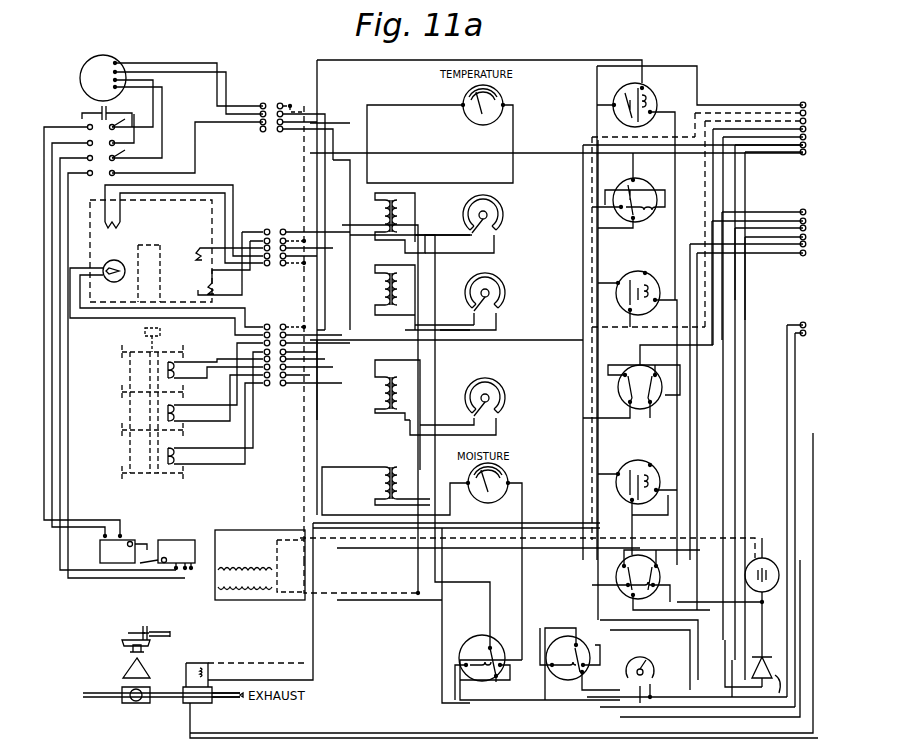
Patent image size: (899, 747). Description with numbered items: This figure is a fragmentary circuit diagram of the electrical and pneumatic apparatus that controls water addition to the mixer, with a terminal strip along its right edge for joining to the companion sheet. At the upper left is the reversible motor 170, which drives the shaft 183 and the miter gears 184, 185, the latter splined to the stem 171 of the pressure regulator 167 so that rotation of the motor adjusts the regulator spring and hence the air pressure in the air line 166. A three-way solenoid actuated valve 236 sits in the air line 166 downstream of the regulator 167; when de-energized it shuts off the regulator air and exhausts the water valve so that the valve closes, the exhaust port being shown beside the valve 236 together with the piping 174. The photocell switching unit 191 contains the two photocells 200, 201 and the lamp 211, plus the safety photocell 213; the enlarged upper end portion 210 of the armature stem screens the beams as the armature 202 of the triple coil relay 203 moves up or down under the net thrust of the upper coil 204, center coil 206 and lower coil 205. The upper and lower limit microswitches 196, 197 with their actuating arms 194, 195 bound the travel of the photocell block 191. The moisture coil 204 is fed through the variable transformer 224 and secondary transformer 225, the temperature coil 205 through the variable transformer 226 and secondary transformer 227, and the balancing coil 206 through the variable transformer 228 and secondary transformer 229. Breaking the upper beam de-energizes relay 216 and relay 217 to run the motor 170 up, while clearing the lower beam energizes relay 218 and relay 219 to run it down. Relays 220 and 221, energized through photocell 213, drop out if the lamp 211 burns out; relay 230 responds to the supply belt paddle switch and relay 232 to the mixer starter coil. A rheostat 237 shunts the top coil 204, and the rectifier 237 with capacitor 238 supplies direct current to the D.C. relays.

The reversible motor 170 is at (100, 57).
The photocell switching unit 191 is at (215, 206).
The third photocell 213 is at (123, 226).
The light source 211 is at (114, 260).
The photocell 200 is at (196, 250).
The photocell 201 is at (198, 286).
The upper end portion of stem 210 is at (162, 332).
The triple coil relay 203 is at (116, 397).
The armature 202 is at (128, 418).
The upper coil 204 is at (215, 368).
The center coil 206 is at (215, 382).
The lower coil 205 is at (215, 408).
The upper limit microswitch 196 is at (100, 553).
The actuating arm 194 is at (147, 540).
The actuating arm 195 is at (150, 558).
The lower limit microswitch 197 is at (185, 540).
The miter gear 184 is at (145, 626).
The shaft 183 is at (165, 632).
The miter gear 185 is at (124, 637).
The pressure regulator 167 is at (125, 666).
The stem 171 is at (143, 651).
The pipe 174 is at (103, 697).
The three-way solenoid actuated valve 236 is at (200, 703).
The air line 166 is at (318, 733).
The secondary 25-volt transformer 227 is at (390, 236).
The variable transformer 226 is at (505, 218).
The secondary 25-volt transformer 229 is at (395, 310).
The variable transformer 228 is at (507, 288).
The secondary 25-volt transformer 225 is at (395, 420).
The variable transformer 224 is at (507, 385).
The relay 220 is at (652, 98).
The relay 221 is at (642, 218).
The relay 216 is at (650, 280).
The relay 217 is at (648, 381).
The relay 218 is at (653, 478).
The relay 219 is at (632, 598).
The relay 230 is at (472, 645).
The relay 232 is at (562, 640).
The rheostat 237 is at (654, 665).
The capacitor 238 is at (768, 558).